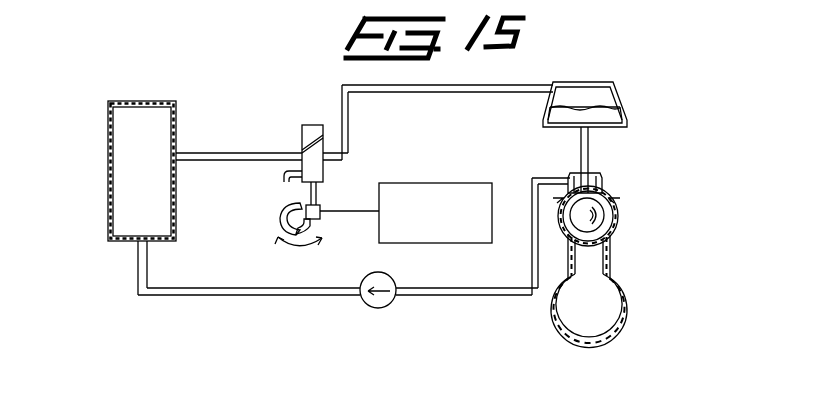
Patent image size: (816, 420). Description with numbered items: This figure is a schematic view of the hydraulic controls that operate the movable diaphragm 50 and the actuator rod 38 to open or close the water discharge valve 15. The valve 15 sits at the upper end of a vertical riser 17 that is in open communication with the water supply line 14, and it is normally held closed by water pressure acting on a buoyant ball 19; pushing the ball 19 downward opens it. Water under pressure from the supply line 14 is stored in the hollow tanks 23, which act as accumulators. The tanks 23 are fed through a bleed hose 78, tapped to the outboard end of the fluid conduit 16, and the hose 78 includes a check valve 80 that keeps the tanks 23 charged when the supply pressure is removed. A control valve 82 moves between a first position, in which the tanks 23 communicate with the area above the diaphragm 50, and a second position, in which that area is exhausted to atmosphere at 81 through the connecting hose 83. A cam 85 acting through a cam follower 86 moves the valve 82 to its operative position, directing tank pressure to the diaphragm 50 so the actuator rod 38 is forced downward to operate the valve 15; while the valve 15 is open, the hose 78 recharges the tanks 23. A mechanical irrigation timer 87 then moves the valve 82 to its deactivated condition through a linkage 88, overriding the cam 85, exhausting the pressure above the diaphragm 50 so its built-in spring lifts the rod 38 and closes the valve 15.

The water supply line 14 is at (625, 297).
The water discharge valve 15 is at (610, 218).
The fluid conduit 16 is at (607, 180).
The vertical riser 17 is at (606, 260).
The ball 19 is at (605, 237).
The hollow tanks 23 is at (108, 176).
The actuator rod 38 is at (589, 150).
The movable diaphragm 50 is at (597, 110).
The bleed hose 78 is at (482, 297).
The check valve 80 is at (383, 309).
The atmospheric exhaust 81 is at (282, 180).
The valve 82 is at (302, 135).
The connecting hose 83 is at (432, 93).
The cam 85 is at (277, 226).
The cam follower 86 is at (318, 228).
The mechanical irrigation timer 87 is at (460, 190).
The linkage 88 is at (345, 206).